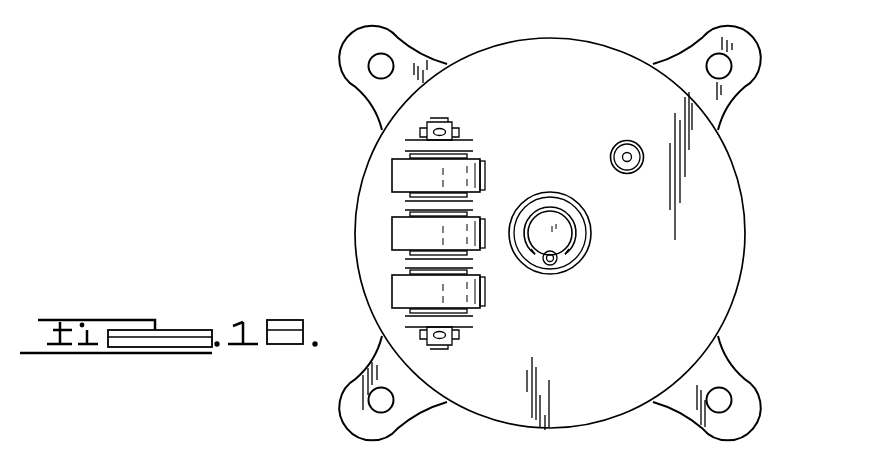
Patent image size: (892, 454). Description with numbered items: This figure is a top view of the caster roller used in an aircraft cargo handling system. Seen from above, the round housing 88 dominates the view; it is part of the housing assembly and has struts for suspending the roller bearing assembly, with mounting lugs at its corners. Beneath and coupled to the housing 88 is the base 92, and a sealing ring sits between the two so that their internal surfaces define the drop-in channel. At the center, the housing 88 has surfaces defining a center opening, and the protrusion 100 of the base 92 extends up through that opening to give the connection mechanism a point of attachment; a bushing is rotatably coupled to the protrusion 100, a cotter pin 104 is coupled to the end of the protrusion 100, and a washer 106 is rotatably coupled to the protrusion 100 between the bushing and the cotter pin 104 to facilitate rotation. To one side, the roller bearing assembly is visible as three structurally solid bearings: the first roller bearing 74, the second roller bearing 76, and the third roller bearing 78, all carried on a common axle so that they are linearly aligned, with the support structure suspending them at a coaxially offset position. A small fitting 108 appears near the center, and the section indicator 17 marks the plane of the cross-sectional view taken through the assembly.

The section line 17- 17 is at (390, 233).
The first roller bearing 74 is at (400, 296).
The second roller bearing 76 is at (400, 234).
The third roller bearing 78 is at (400, 176).
The housing 88 is at (733, 302).
The base 92 is at (743, 360).
The protrusion 100 is at (548, 220).
The cotter pin 104 is at (545, 264).
The washer 106 is at (572, 262).
The pivot boss 108 is at (618, 140).